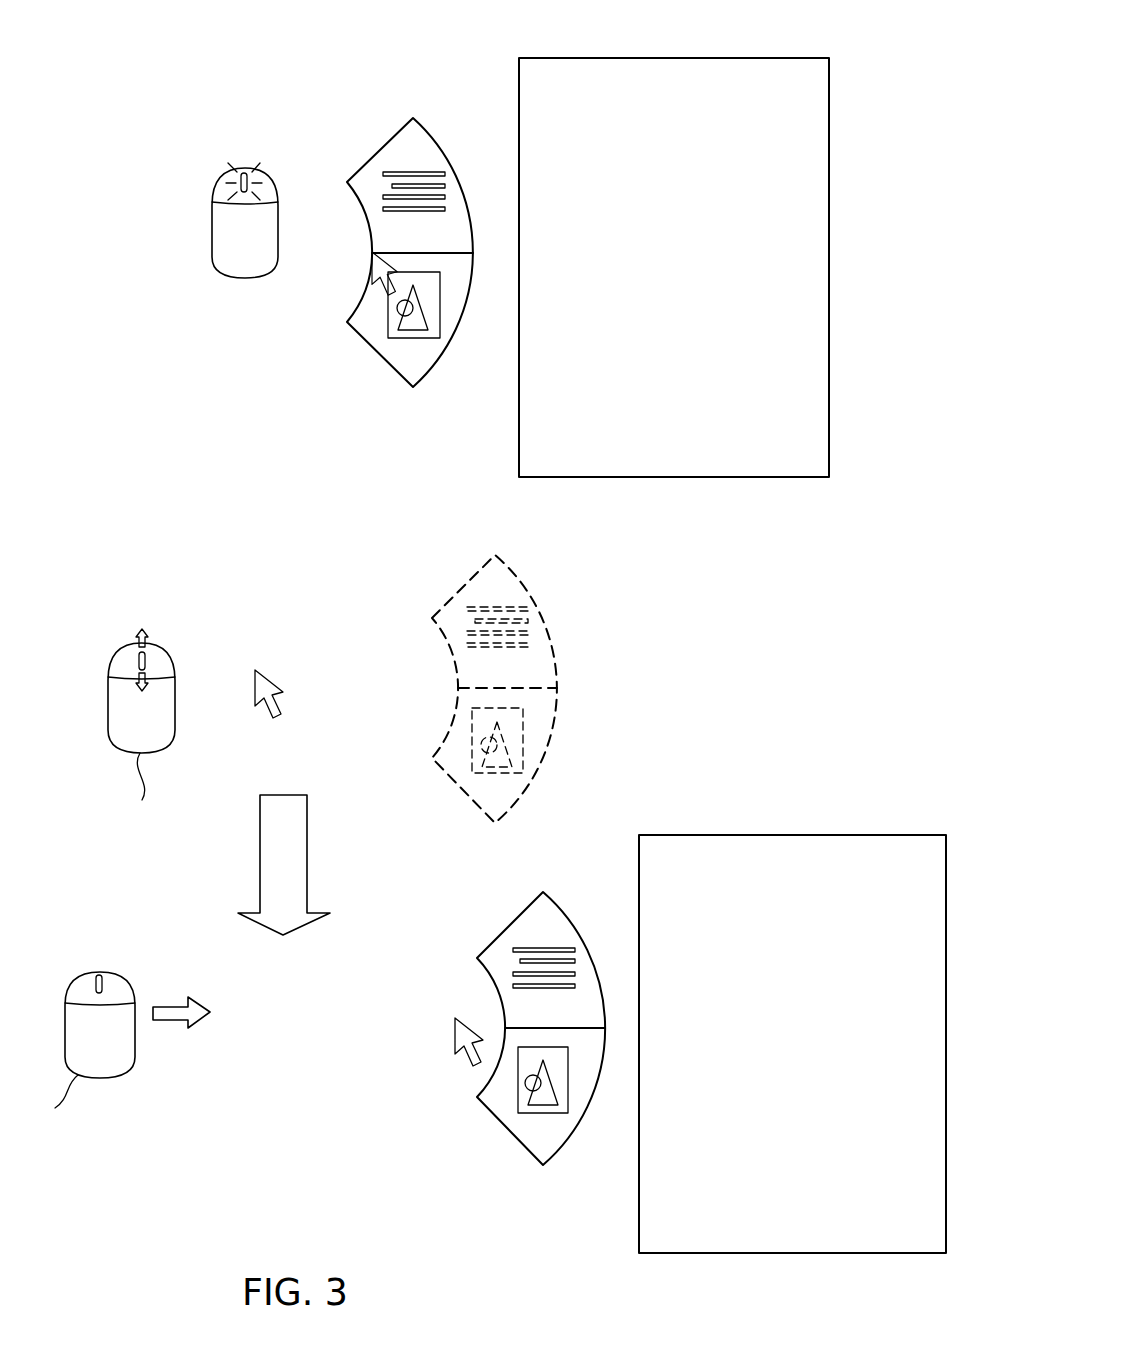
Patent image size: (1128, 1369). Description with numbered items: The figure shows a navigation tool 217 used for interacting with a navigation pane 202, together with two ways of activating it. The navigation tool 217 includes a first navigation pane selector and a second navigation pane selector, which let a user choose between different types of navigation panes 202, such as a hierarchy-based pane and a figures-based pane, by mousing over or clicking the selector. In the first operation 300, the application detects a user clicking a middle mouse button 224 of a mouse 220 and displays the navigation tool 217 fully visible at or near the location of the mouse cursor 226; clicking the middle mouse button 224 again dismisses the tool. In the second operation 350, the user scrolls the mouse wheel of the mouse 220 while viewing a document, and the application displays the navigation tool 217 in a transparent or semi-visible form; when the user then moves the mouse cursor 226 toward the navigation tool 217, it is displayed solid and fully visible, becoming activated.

The navigation pane 202 is at (718, 57).
The navigation tool 217 is at (397, 372).
The mouse 220 is at (212, 232).
The middle mouse button 224 is at (236, 186).
The mouse cursor 226 is at (370, 258).
The first operation 300 is at (297, 418).
The second operation 350 is at (643, 672).